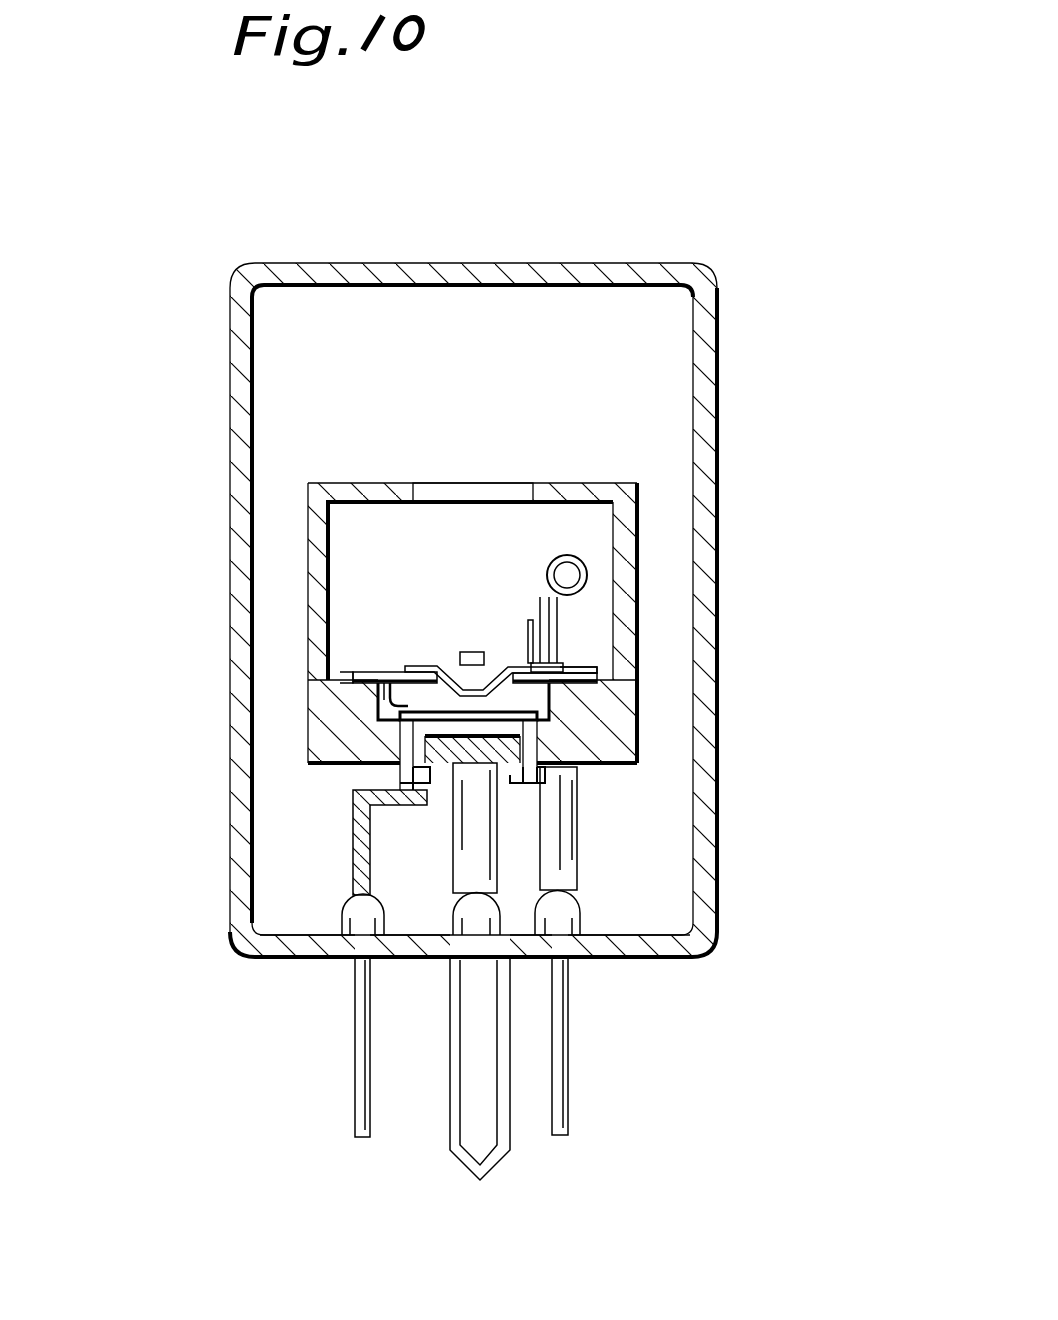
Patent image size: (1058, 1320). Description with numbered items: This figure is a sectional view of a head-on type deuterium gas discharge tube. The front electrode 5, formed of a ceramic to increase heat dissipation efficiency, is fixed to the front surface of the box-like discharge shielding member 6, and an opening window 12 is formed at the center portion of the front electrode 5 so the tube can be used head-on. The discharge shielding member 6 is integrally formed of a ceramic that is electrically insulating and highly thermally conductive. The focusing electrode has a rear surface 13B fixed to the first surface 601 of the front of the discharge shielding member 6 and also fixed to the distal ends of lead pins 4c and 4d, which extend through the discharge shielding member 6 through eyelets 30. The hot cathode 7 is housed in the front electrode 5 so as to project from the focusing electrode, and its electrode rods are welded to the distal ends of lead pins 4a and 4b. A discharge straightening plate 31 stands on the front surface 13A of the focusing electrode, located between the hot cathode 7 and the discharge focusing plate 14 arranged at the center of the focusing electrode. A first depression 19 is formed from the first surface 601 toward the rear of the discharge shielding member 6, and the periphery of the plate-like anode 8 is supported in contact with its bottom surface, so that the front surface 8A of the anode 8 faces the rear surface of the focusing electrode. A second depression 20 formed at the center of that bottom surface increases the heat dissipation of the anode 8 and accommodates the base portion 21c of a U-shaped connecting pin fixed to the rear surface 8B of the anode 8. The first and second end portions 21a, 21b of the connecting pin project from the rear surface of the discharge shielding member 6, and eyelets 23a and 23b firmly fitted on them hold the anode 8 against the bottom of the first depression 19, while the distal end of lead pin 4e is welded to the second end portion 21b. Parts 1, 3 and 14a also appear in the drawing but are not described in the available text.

The housing case 1 is at (717, 362).
The base of housing 3 is at (675, 957).
The front electrode 5 is at (637, 514).
The discharge shielding member 6 is at (313, 730).
The hot cathode 7 is at (588, 572).
The anode 8 is at (600, 690).
The front surface of anode plate 8A is at (438, 795).
The rear surface of anode plate 8B is at (590, 828).
The opening window 12 is at (473, 490).
The front surface of focusing electrode 13A is at (392, 690).
The rear surface of focusing electrode 13B is at (377, 690).
The discharge focusing plate 14 is at (410, 666).
The end of contact spring 14a is at (490, 667).
The first depression 19 is at (403, 665).
The second depression 20 is at (552, 720).
The first end portion of connecting pin 21a is at (545, 760).
The second end portion of connecting pin 21b is at (413, 752).
The base portion of connecting pin 21c is at (395, 712).
The eyelet 23a is at (540, 775).
The eyelet 23b is at (400, 788).
The eyelets 30 is at (470, 652).
The discharge straightening plate 31 is at (536, 623).
The first surface of discharge shielding member 601 is at (353, 672).
The lead pin 4a is at (477, 830).
The lead pin 4b is at (679, 971).
The lead pin 4c is at (560, 872).
The lead pin 4d is at (720, 997).
The lead pin 4e is at (360, 879).